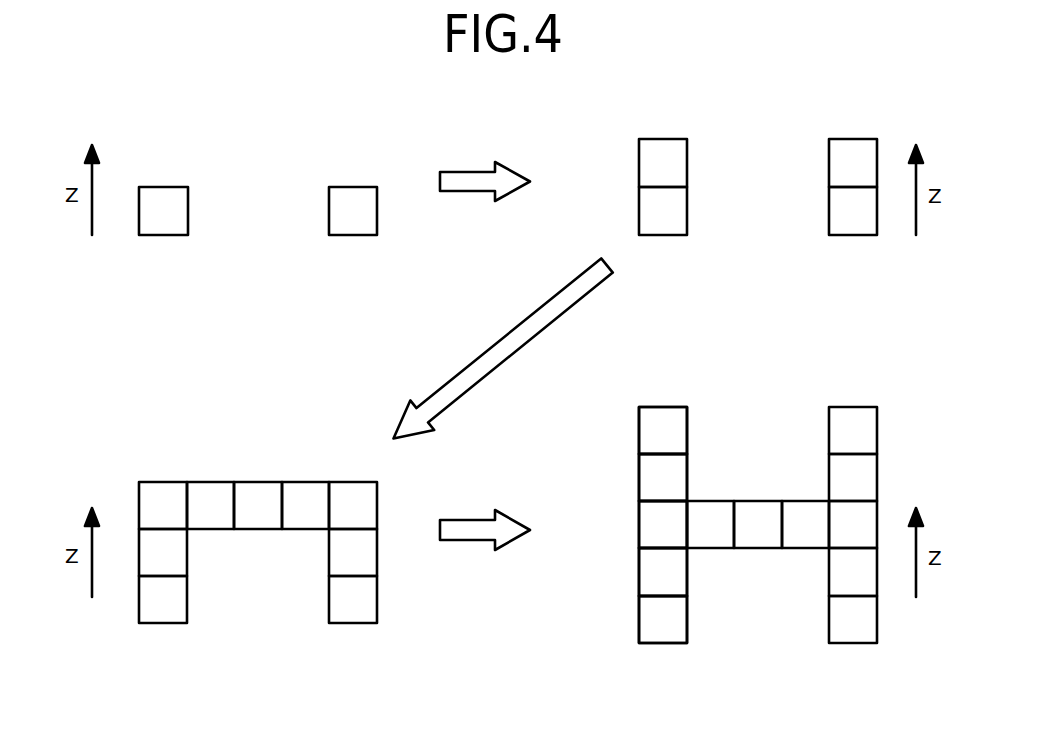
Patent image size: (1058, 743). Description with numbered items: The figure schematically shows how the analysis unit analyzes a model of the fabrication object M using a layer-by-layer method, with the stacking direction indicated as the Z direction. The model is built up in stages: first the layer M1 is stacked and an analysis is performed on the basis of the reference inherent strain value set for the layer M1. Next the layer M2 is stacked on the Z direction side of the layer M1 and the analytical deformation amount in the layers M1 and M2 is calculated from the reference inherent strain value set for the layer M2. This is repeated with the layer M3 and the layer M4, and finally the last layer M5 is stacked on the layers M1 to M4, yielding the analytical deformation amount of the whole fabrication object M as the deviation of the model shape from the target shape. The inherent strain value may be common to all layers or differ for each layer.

The fabrication object M is at (810, 369).
The layer M1 is at (163, 200).
The layer M2 is at (665, 163).
The layer M3 is at (353, 505).
The layer M4 is at (665, 478).
The layer M5 is at (665, 428).